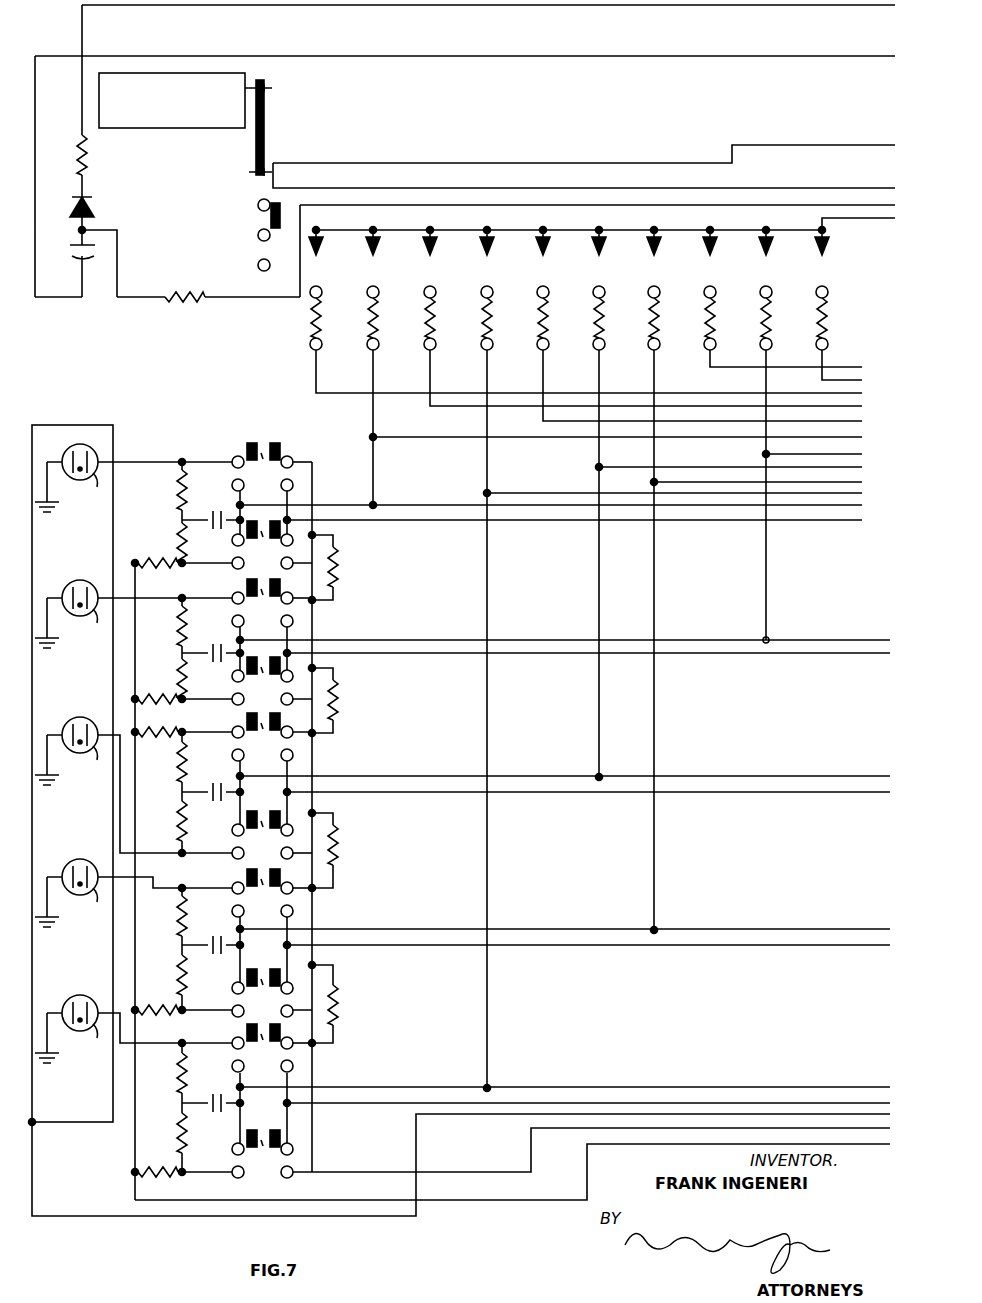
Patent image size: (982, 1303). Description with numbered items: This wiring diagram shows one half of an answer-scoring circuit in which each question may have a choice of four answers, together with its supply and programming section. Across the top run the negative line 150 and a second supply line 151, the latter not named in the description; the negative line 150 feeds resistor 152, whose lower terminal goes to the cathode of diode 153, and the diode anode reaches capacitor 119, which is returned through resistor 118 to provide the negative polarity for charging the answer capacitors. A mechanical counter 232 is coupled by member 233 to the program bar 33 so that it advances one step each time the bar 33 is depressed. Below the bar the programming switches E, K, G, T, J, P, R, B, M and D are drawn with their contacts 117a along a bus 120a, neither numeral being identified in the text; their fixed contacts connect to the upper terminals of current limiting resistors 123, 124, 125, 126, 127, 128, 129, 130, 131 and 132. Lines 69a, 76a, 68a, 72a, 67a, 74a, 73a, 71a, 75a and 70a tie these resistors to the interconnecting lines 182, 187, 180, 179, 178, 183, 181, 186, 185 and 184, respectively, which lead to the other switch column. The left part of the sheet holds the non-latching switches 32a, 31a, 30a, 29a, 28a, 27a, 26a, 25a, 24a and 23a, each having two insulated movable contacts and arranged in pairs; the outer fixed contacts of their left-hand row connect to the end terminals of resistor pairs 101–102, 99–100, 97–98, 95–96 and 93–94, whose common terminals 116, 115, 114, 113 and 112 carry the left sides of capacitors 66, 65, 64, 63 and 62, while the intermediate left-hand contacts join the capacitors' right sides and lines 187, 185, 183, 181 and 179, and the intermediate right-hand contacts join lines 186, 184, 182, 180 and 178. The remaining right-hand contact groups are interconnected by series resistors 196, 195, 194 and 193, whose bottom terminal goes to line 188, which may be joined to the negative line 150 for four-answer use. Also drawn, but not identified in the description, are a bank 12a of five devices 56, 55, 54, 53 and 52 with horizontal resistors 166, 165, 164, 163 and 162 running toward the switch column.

The negative line 150 is at (730, 6).
The supply line 151 is at (727, 59).
The counter 232 is at (222, 72).
The member 233 is at (264, 137).
The resistor 152 is at (84, 164).
The diode 153 is at (82, 211).
The capacitor 119 is at (86, 273).
The resistor 118 is at (181, 296).
The program bar 33 is at (764, 145).
The contact arrows 117a is at (372, 208).
The bus line 120a is at (469, 230).
The current limiting resistor 123 is at (332, 318).
The current limiting resistor 124 is at (389, 318).
The current limiting resistor 125 is at (446, 318).
The current limiting resistor 126 is at (503, 318).
The current limiting resistor 127 is at (559, 318).
The current limiting resistor 128 is at (615, 318).
The current limiting resistor 129 is at (670, 318).
The current limiting resistor 130 is at (726, 318).
The current limiting resistor 131 is at (782, 318).
The current limiting resistor 132 is at (838, 318).
The line 69a is at (834, 395).
The line 76a is at (834, 447).
The line 68a is at (834, 411).
The line 72a is at (834, 507).
The line 67a is at (834, 429).
The line 74a is at (674, 470).
The line 73a is at (834, 488).
The line 71a is at (830, 368).
The line 75a is at (834, 467).
The line 70a is at (834, 377).
The line 187 is at (672, 535).
The line 186 is at (750, 522).
The line 185 is at (721, 638).
The line 184 is at (734, 658).
The line 183 is at (668, 776).
The line 182 is at (790, 806).
The line 181 is at (786, 928).
The line 180 is at (815, 972).
The line 179 is at (682, 1086).
The line 178 is at (754, 1100).
The line 188 is at (385, 1168).
The tube bank 12a is at (84, 844).
The tube 56 is at (133, 478).
The tube 55 is at (133, 614).
The tube 54 is at (133, 785).
The tube 53 is at (133, 893).
The tube 52 is at (133, 1029).
The resistor 102 is at (176, 482).
The common terminal 116 is at (176, 520).
The resistor 101 is at (176, 543).
The capacitor 66 is at (222, 510).
The resistor 100 is at (186, 624).
The common terminal 115 is at (180, 650).
The resistor 99 is at (180, 676).
The capacitor 65 is at (214, 668).
The resistor 98 is at (180, 760).
The common terminal 114 is at (180, 796).
The resistor 97 is at (180, 834).
The capacitor 64 is at (210, 784).
The resistor 96 is at (180, 912).
The common terminal 113 is at (180, 949).
The resistor 95 is at (180, 989).
The capacitor 63 is at (212, 942).
The resistor 94 is at (180, 1068).
The common terminal 112 is at (180, 1107).
The resistor 93 is at (180, 1146).
The capacitor 62 is at (210, 1124).
The non-latching switch 32a is at (272, 467).
The non-latching switch 31a is at (247, 545).
The non-latching switch 30a is at (272, 603).
The non-latching switch 29a is at (247, 681).
The non-latching switch 28a is at (247, 737).
The non-latching switch 27a is at (272, 835).
The non-latching switch 26a is at (272, 893).
The non-latching switch 25a is at (247, 993).
The non-latching switch 24a is at (272, 1048).
The non-latching switch 23a is at (247, 1154).
The resistor 166 is at (162, 572).
The resistor 165 is at (134, 698).
The resistor 164 is at (167, 728).
The resistor 163 is at (167, 1017).
The resistor 162 is at (135, 1174).
The resistor 196 is at (338, 578).
The resistor 195 is at (341, 716).
The resistor 194 is at (341, 861).
The resistor 193 is at (341, 1015).